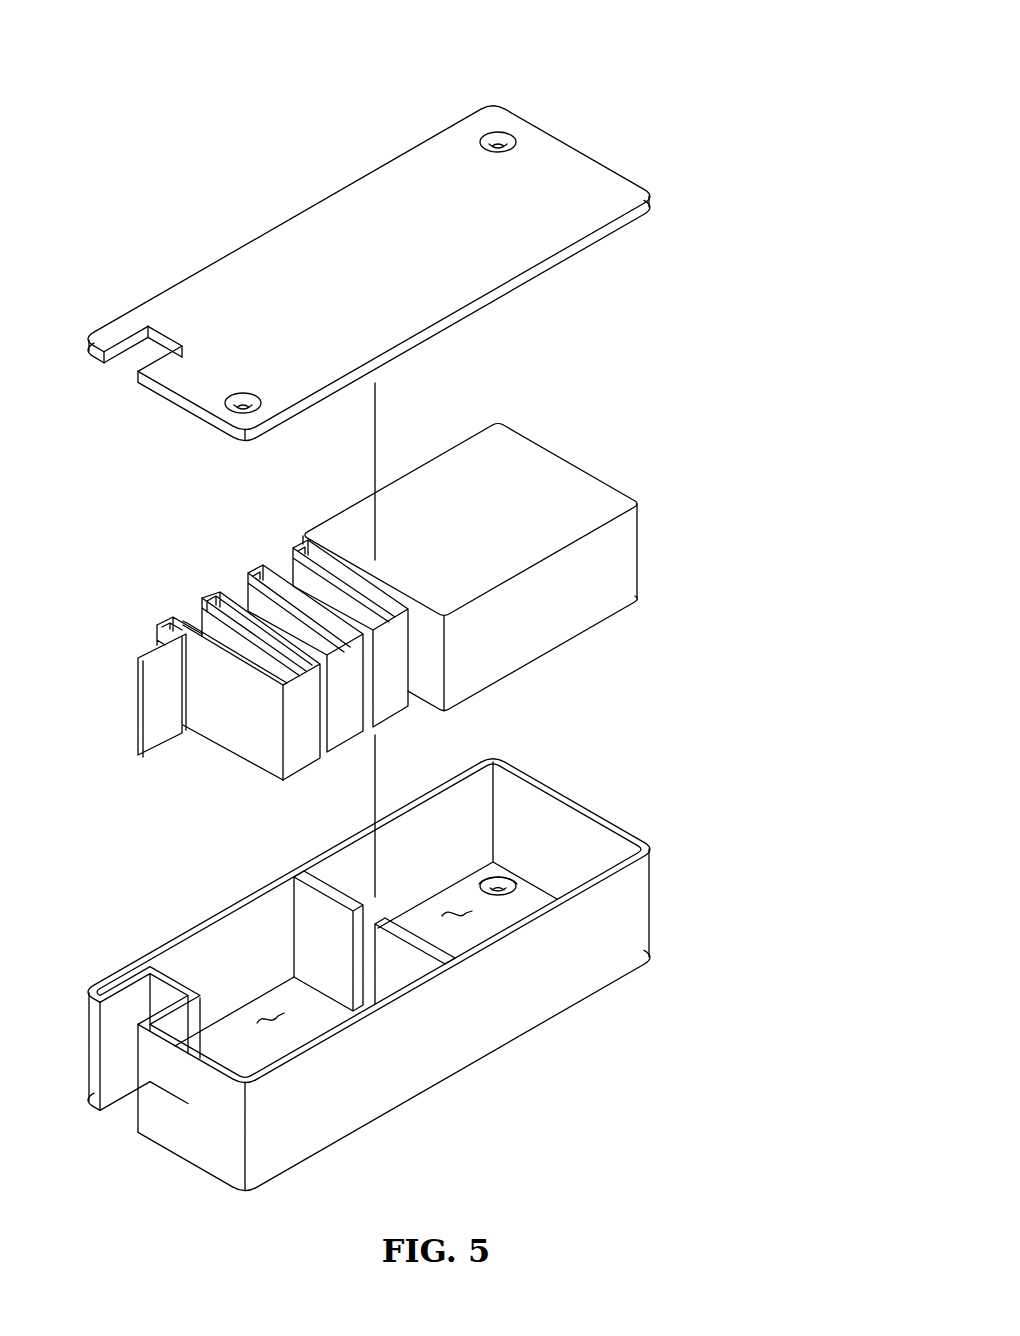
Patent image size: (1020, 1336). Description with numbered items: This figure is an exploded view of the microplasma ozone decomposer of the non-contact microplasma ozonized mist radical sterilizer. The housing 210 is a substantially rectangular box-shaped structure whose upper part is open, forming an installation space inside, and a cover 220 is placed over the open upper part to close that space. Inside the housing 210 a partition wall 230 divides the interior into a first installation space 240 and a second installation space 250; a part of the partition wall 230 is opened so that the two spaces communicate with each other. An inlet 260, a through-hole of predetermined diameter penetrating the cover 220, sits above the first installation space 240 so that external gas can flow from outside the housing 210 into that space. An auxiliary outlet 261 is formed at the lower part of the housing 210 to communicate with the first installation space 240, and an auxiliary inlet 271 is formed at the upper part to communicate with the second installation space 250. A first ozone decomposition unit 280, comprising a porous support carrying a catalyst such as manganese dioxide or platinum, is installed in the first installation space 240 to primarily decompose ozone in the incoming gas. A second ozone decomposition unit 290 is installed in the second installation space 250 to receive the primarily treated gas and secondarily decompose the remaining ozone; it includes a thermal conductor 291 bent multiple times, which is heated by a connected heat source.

The housing 210 is at (432, 949).
The cover 220 is at (612, 183).
The partition wall 230 is at (398, 968).
The first installation space 240 is at (453, 903).
The second installation space 250 is at (273, 1024).
The inlet 260 is at (500, 136).
The auxiliary outlet 261 is at (498, 894).
The auxiliary inlet 271 is at (246, 411).
The first ozone decomposition unit 280 is at (587, 452).
The second ozone decomposition unit 290 is at (254, 717).
The thermal conductor 291 is at (227, 717).